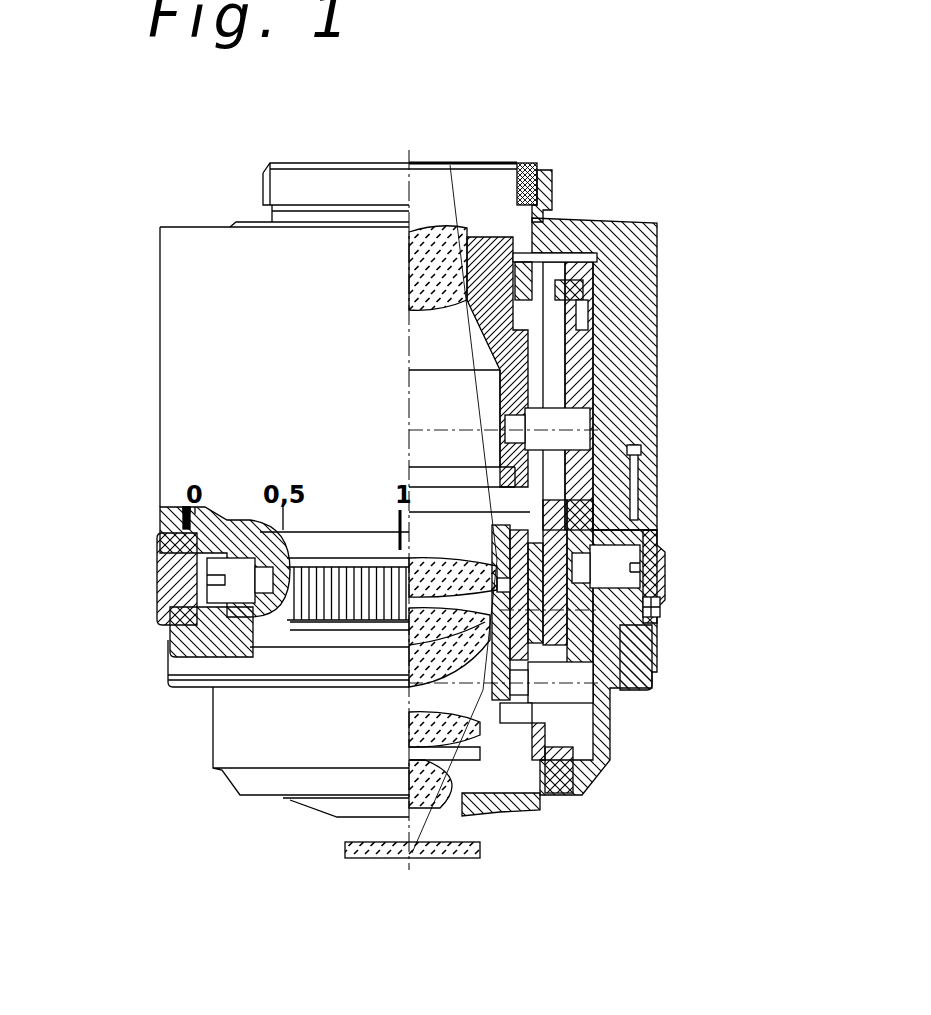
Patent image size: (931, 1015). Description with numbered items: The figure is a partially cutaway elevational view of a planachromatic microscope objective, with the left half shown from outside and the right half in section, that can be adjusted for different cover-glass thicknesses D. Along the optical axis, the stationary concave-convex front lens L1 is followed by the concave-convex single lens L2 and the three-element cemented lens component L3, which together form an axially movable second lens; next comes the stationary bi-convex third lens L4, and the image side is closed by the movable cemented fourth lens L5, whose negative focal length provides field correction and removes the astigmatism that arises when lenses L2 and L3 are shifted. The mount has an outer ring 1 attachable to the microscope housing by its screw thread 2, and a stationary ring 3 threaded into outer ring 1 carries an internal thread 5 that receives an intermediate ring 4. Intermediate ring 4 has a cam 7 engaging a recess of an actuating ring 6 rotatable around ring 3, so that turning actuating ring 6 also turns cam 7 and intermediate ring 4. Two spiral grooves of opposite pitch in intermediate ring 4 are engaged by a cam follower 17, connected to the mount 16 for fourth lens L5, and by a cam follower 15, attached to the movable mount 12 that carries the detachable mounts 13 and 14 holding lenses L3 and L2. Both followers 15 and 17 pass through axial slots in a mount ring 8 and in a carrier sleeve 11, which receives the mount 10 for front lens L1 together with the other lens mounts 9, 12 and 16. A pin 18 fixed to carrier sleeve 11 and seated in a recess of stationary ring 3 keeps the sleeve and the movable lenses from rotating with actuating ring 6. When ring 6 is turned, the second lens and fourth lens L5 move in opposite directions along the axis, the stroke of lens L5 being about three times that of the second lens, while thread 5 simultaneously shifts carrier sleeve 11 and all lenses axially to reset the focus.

The outer ring 1 is at (565, 230).
The screw thread 2 is at (550, 183).
The stationary ring 3 is at (656, 243).
The intermediate ring 4 is at (577, 375).
The internal thread 5 is at (563, 322).
The actuating ring 6 is at (660, 622).
The cam 7 is at (630, 578).
The mount ring 8 is at (577, 540).
The lens mount 9 is at (634, 468).
The mount for first lens 10 is at (540, 795).
The carrier sleeve 11 is at (653, 665).
The movable mount 12 is at (665, 607).
The detachable mount 13 is at (660, 550).
The detachable mount 14 is at (545, 750).
The cam follower 15 is at (575, 692).
The mount for fourth lens 16 is at (583, 318).
The cam follower 17 is at (568, 421).
The pin 18 is at (218, 568).
The front lens L1 is at (412, 790).
The concave-convex single lens L2 is at (433, 730).
The cemented lens component L3 is at (410, 658).
The bi-convex single lens L4 is at (413, 582).
The fourth lens L5 is at (410, 272).
The cover-glass thickness D is at (347, 855).